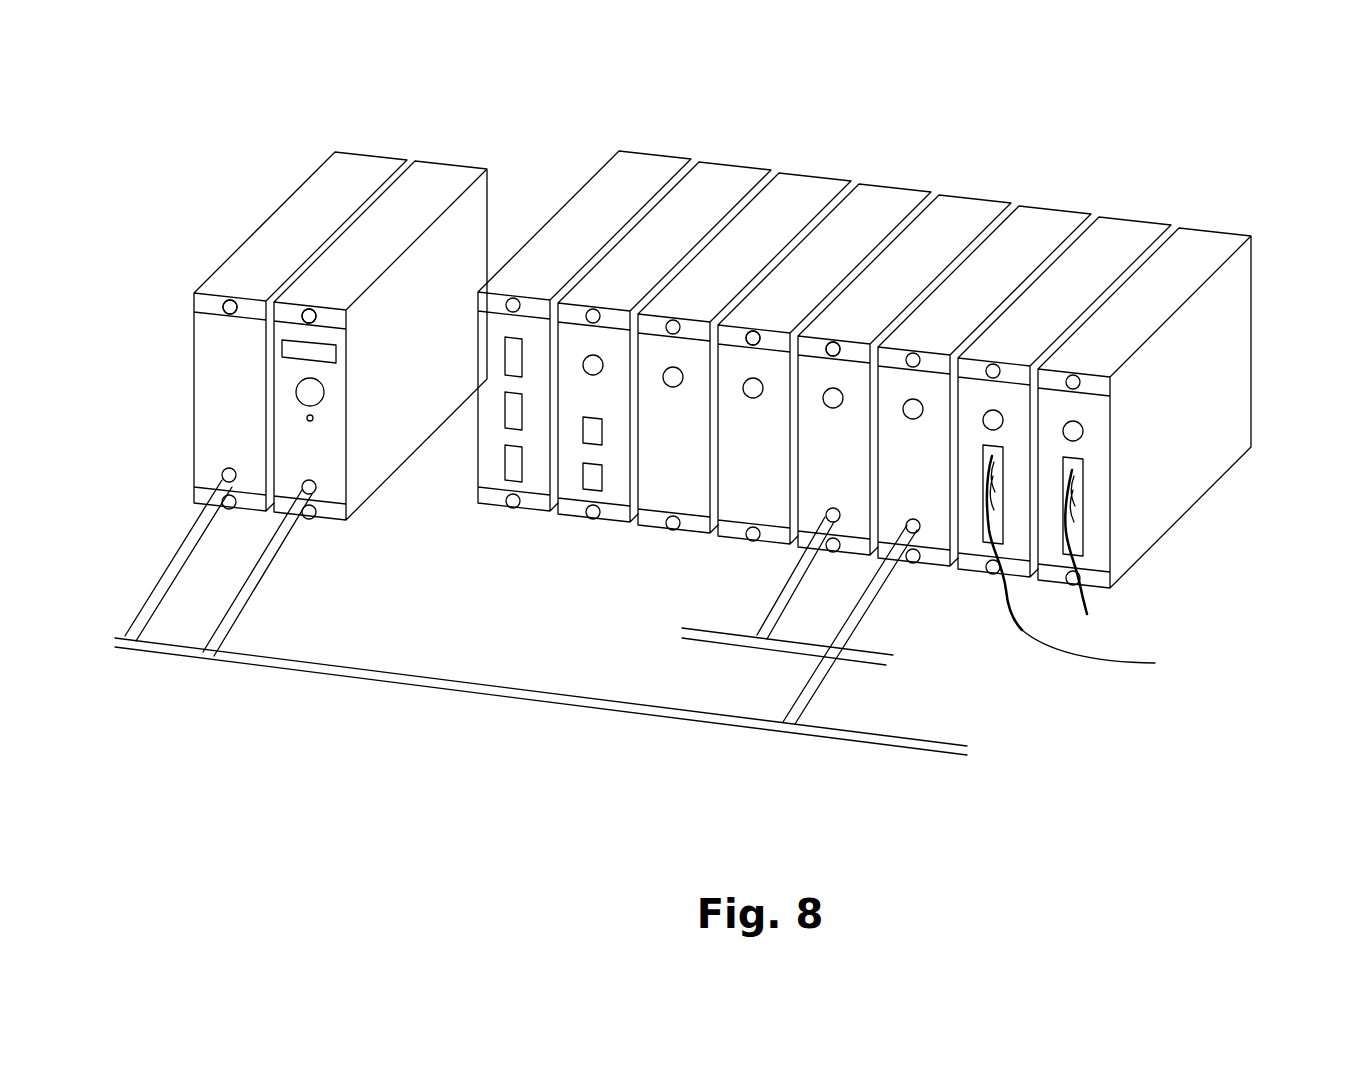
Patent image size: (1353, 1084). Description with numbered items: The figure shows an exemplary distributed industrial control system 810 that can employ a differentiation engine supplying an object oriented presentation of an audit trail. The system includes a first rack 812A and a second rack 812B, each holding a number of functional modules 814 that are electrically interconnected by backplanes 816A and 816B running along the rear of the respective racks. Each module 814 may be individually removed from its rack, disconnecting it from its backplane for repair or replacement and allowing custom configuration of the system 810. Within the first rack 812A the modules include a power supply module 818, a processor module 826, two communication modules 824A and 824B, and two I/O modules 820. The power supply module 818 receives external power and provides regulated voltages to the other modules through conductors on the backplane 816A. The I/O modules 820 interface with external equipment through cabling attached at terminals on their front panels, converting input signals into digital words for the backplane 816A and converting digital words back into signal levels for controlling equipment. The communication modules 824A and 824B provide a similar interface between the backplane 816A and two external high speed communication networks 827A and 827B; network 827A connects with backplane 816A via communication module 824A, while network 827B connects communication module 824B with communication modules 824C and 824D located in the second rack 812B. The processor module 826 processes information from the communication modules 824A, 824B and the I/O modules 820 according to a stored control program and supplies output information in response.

The distributed industrial control system 810 is at (1118, 831).
The first rack 812A is at (1143, 515).
The second rack 812B is at (443, 414).
The functional modules 814 is at (672, 348).
The backplane 816A is at (1237, 151).
The backplane 816B is at (512, 96).
The power supply module 818 is at (497, 482).
The I/O modules 820 is at (1090, 472).
The communication module 824A is at (842, 383).
The communication module 824B is at (932, 390).
The communication module 824C is at (217, 440).
The communication module 824D is at (327, 490).
The processor module 826 is at (577, 488).
The high speed communication network 827A is at (690, 628).
The high speed communication network 827B is at (363, 669).